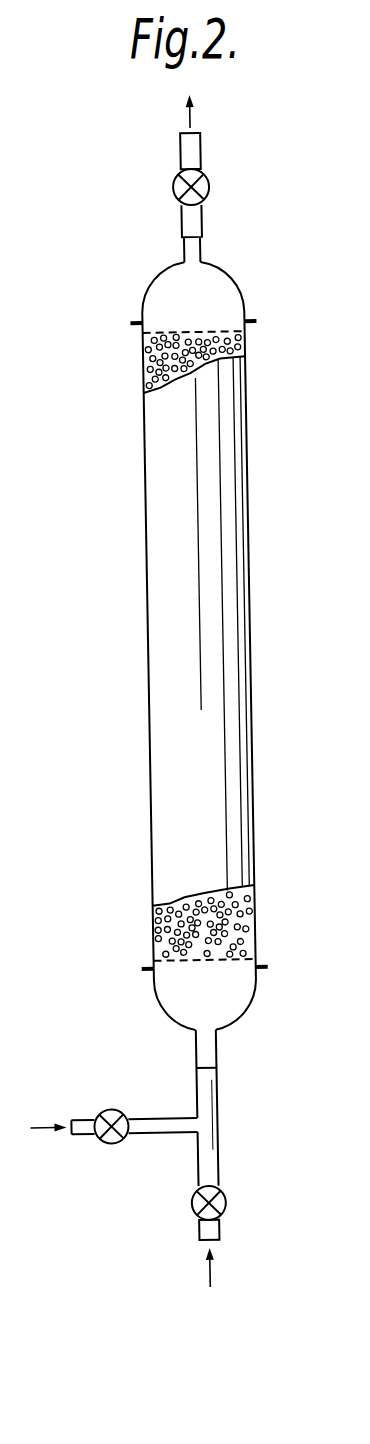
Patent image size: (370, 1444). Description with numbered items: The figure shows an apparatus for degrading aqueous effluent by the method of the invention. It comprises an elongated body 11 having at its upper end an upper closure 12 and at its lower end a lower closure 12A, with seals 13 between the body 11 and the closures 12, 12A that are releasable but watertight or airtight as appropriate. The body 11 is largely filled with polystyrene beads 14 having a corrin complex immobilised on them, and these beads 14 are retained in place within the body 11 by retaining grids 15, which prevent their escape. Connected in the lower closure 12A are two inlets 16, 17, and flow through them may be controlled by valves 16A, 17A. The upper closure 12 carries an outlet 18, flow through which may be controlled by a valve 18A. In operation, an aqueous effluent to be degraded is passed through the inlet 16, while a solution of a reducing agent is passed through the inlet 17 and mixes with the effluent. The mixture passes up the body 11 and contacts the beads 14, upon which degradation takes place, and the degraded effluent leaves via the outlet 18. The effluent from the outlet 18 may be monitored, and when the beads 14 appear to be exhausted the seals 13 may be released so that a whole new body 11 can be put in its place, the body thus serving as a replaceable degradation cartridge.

The body 11 is at (160, 619).
The upper closure 12 is at (160, 287).
The lower closure 12A is at (230, 1012).
The seals 13 is at (131, 320).
The polystyrene beads 14 is at (145, 362).
The retaining grids 15 is at (215, 332).
The inlet 16 is at (207, 1160).
The valve 16A is at (222, 1206).
The inlet 17 is at (143, 1128).
The valve 17A is at (102, 1109).
The outlet 18 is at (190, 220).
The valve 18A is at (199, 186).